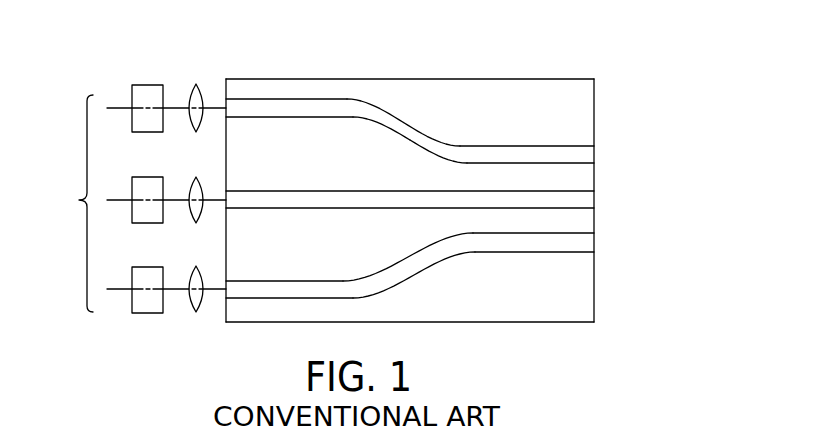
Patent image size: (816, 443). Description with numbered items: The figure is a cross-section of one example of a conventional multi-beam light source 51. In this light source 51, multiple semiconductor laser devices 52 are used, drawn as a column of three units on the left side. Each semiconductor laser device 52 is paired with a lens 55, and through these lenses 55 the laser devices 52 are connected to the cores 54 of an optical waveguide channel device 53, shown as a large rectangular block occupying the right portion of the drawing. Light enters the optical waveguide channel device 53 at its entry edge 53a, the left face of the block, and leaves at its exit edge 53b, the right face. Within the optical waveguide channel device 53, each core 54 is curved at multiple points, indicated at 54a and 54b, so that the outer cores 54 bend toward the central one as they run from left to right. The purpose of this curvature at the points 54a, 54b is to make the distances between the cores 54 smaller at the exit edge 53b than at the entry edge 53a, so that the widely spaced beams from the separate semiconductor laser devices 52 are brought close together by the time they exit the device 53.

The light source 51 is at (139, 168).
The semiconductor laser devices 52 is at (146, 93).
The lenses 55 is at (193, 100).
The optical waveguide channel device 53 is at (414, 208).
The entry edge 53a is at (222, 319).
The exit edge 53b is at (597, 322).
The cores 54 is at (410, 155).
The curved point 54a is at (369, 100).
The curved point 54b is at (436, 137).